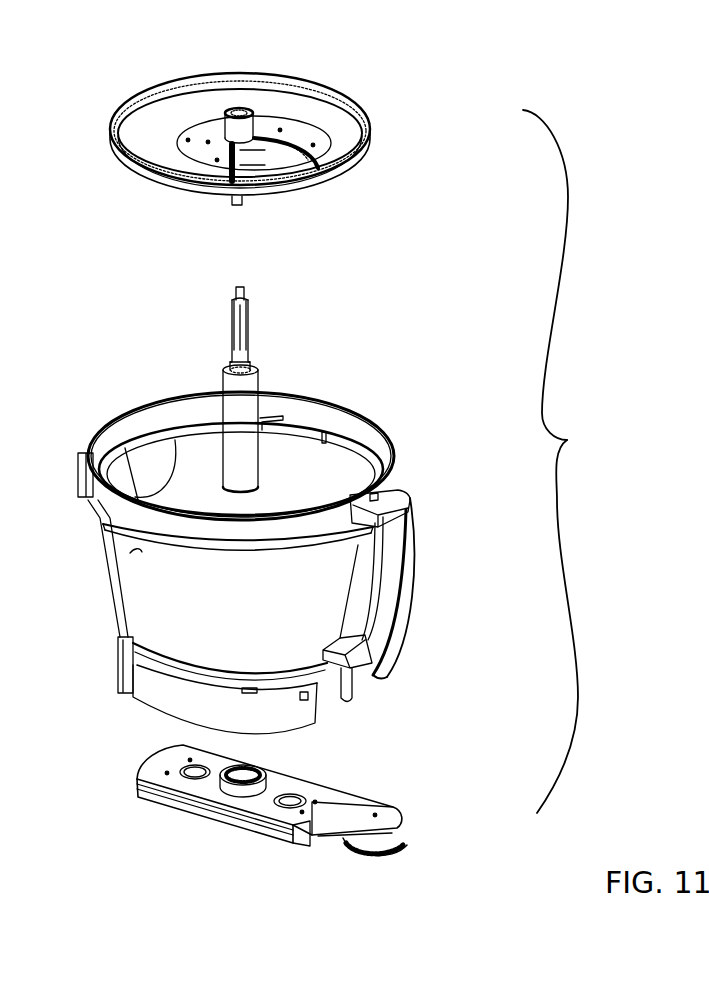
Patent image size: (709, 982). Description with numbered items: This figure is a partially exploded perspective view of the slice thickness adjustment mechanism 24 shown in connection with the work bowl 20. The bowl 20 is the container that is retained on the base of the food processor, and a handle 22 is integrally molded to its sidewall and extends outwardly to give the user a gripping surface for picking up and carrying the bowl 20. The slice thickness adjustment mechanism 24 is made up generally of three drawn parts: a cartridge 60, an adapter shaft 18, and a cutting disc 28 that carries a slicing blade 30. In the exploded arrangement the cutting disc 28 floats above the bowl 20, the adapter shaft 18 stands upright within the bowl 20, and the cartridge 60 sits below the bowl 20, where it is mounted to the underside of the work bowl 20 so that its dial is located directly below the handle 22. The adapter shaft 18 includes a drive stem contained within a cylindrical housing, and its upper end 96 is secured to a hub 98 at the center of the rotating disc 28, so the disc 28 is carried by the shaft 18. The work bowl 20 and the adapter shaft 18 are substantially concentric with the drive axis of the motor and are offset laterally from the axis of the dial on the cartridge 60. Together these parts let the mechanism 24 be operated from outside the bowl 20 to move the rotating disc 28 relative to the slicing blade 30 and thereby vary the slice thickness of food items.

The adapter shaft 18 is at (247, 390).
The bowl 20 is at (411, 422).
The handle 22 is at (400, 561).
The slice thickness adjustment mechanism 24 is at (580, 461).
The cutting disc 28 is at (346, 70).
The slicing blade 30 is at (287, 165).
The cartridge 60 is at (384, 773).
The upper end 96 is at (246, 290).
The hub 98 is at (239, 111).